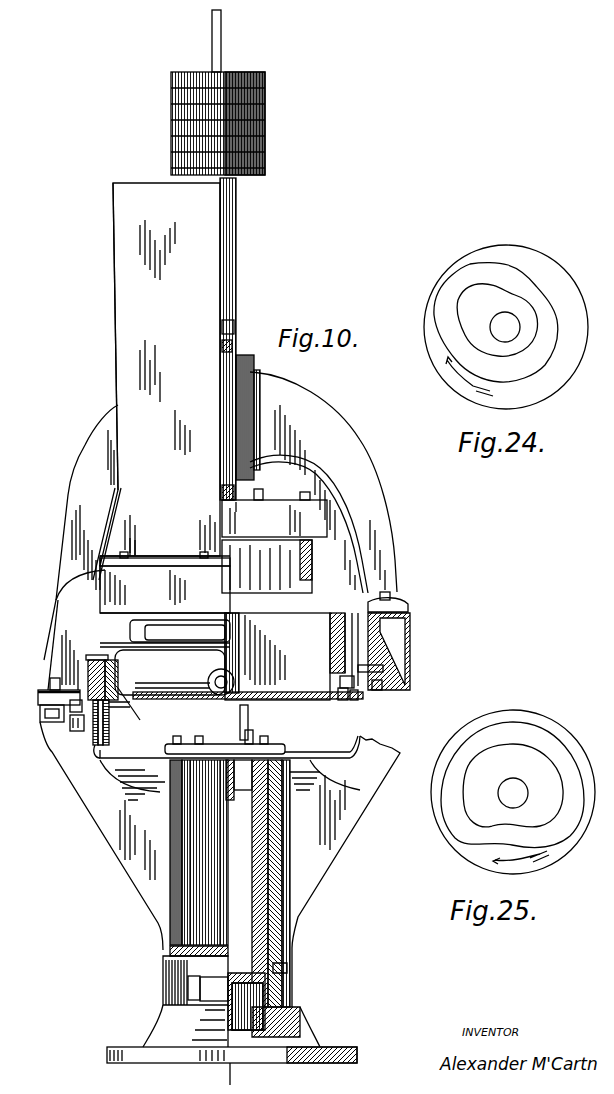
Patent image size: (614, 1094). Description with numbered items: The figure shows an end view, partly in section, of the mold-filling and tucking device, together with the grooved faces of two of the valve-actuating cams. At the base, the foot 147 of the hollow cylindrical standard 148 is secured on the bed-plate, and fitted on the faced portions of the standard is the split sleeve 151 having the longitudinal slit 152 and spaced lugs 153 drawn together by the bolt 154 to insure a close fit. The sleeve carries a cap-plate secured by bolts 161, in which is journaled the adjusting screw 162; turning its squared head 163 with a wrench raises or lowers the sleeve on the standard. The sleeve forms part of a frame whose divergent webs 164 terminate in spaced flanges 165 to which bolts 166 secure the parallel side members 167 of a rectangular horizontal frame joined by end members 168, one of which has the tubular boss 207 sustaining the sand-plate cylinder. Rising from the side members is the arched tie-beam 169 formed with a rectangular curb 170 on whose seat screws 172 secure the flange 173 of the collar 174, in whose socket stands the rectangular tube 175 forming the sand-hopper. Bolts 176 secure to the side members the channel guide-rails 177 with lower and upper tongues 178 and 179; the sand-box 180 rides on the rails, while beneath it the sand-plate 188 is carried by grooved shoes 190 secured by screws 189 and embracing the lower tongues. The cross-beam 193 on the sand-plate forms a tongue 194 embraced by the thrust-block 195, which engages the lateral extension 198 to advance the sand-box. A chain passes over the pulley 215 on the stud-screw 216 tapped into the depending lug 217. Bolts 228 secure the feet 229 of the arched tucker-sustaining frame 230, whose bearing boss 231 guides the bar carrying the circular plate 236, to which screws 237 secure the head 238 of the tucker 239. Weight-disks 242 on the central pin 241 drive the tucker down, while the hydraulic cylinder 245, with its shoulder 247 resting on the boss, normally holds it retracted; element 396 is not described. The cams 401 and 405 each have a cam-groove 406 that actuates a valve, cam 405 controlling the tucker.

In FIG. 10, the central pin 241 is at (221, 44).
In FIG. 10, the weight-disks 242 is at (265, 118).
In FIG. 10, the standing rectangular tube 175 is at (160, 374).
In FIG. 10, the bearing boss 231 is at (254, 398).
In FIG. 10, the shoulder 247 is at (236, 352).
In FIG. 10, the hydraulic cylinder 245 is at (220, 493).
In FIG. 10, the arched tucker-sustaining frame 230 is at (220, 516).
In FIG. 10, the circular plate 236 is at (258, 489).
In FIG. 10, the screws 237 is at (303, 492).
In FIG. 10, the head 238 is at (274, 518).
In FIG. 10, the plate 396 is at (246, 515).
In FIG. 10, the tucker 239 is at (312, 572).
In FIG. 10, the screws 172 is at (160, 566).
In FIG. 10, the flange 173 is at (169, 569).
In FIG. 10, the collar 174 is at (142, 536).
In FIG. 10, the rectangular curb 170 is at (165, 589).
In FIG. 10, the arched tie-beam 169 is at (76, 630).
In FIG. 10, the bolts 228 is at (390, 592).
In FIG. 10, the feet 229 is at (408, 604).
In FIG. 10, the sand-box 180 is at (325, 630).
In FIG. 10, the tongues 179 is at (358, 647).
In FIG. 10, the side members 167 is at (395, 640).
In FIG. 10, the bolts 176 is at (383, 668).
In FIG. 10, the guide-rails 177 is at (382, 685).
In FIG. 10, the tongues 178 is at (240, 684).
In FIG. 10, the laterally grooved shoes 190 is at (340, 704).
In FIG. 10, the lateral extension 198 is at (340, 680).
In FIG. 10, the sand-plate 188 is at (231, 666).
In FIG. 10, the tubular boss 207 is at (208, 671).
In FIG. 10, the end members 168 is at (170, 672).
In FIG. 10, the tongue 194 is at (172, 677).
In FIG. 10, the thrust-block 195 is at (97, 673).
In FIG. 10, the spaced flanges 165 is at (45, 700).
In FIG. 10, the bolts 166 is at (42, 722).
In FIG. 10, the screws 189 is at (120, 712).
In FIG. 10, the cross-beam 193 is at (139, 709).
In FIG. 10, the stud-screw 216 is at (114, 722).
In FIG. 10, the depending lug 217 is at (75, 731).
In FIG. 10, the peripherally grooved pulley 215 is at (95, 758).
In FIG. 10, the bolts 161 is at (185, 738).
In FIG. 10, the squared head 163 is at (248, 712).
In FIG. 10, the webs 164 is at (220, 836).
In FIG. 10, the adjusting screw 162 is at (232, 800).
In FIG. 10, the split sleeve 151 is at (296, 855).
In FIG. 10, the longitudinal slit 152 is at (220, 885).
In FIG. 10, the hollow cylindrical standard 148 is at (252, 893).
In FIG. 10, the spaced lugs 153 is at (214, 989).
In FIG. 10, the bolt 154 is at (188, 990).
In FIG. 10, the foot 147 is at (140, 1047).
In FIG. 24, the cam-wheel 401 is at (496, 329).
In FIG. 24, the cam-groove 406 is at (497, 329).
In FIG. 25, the cam-groove 406 is at (512, 793).
In FIG. 25, the cam-wheel 405 is at (513, 785).